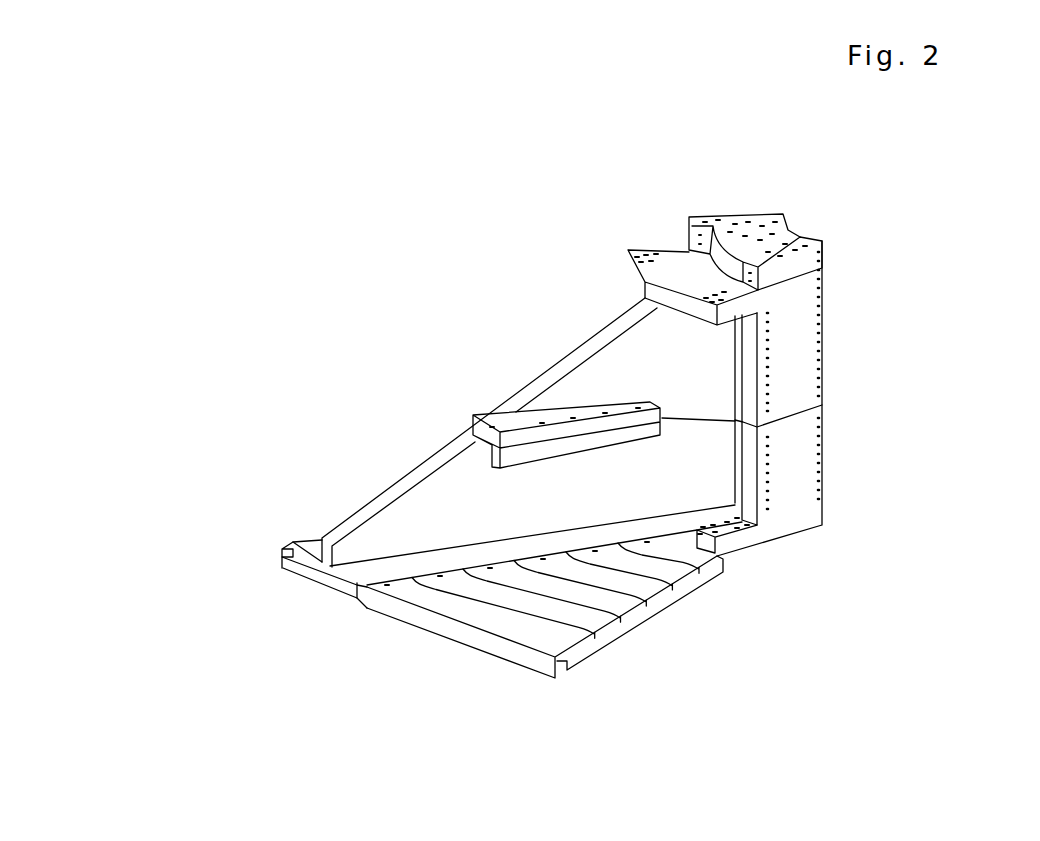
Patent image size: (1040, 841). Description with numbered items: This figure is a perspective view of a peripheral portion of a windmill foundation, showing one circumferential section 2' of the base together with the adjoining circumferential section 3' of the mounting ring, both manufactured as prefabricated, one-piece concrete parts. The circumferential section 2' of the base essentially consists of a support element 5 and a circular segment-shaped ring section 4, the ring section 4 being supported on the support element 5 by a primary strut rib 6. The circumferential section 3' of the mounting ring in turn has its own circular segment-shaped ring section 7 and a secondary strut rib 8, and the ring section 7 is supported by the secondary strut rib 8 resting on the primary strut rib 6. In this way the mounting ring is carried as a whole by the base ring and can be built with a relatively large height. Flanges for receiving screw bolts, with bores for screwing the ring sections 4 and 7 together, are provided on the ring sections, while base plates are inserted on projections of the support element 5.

The circumferential section of the base 2' is at (562, 585).
The circumferential section of the mounting ring 3' is at (658, 355).
The ring section 4 is at (805, 482).
The support element 5 is at (312, 546).
The primary strut rib 6 is at (400, 520).
The ring section 7 is at (795, 349).
The secondary strut rib 8 is at (630, 358).